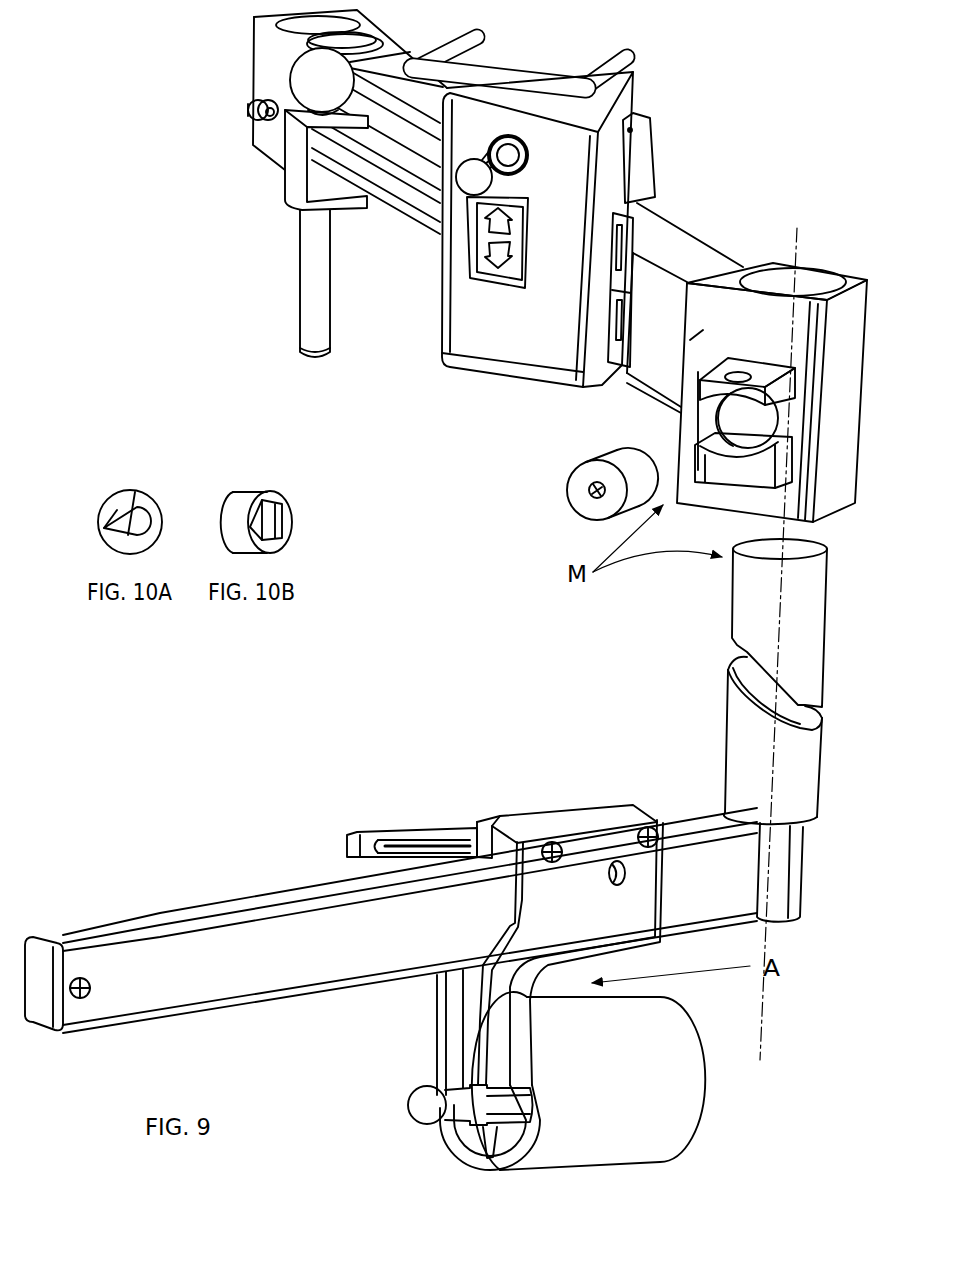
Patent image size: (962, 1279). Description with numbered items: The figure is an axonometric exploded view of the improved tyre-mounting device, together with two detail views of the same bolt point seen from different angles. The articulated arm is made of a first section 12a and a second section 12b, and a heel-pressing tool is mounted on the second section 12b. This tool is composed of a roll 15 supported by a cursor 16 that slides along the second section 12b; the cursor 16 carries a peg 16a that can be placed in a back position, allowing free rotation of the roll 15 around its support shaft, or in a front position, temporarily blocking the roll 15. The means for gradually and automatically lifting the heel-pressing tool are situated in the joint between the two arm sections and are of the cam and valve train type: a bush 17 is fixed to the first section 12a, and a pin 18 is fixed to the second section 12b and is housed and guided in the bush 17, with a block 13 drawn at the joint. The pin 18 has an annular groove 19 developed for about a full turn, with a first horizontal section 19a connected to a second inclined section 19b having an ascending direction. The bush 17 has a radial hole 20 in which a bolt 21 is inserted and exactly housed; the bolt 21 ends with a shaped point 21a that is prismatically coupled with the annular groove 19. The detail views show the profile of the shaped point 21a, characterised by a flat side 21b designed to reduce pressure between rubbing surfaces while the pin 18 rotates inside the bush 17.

In FIG. 9, the first section of the articulated arm 12a is at (660, 237).
In FIG. 9, the second section of the articulated arm 12b is at (170, 928).
In FIG. 9, the connection block 13 is at (793, 257).
In FIG. 9, the roll 15 is at (663, 1110).
In FIG. 9, the cursor 16 is at (587, 848).
In FIG. 9, the peg 16a is at (417, 1098).
In FIG. 9, the bush 17 is at (703, 330).
In FIG. 9, the pin 18 is at (711, 634).
In FIG. 9, the annular groove 19 is at (750, 746).
In FIG. 9, the first horizontal section 19a is at (821, 721).
In FIG. 9, the second inclined section 19b is at (729, 670).
In FIG. 9, the radial hole 20 is at (767, 413).
In FIG. 9, the bolt 21 is at (588, 512).
In FIG. 10A, the bolt 21 is at (130, 522).
In FIG. 10B, the bolt 21 is at (242, 498).
In FIG. 10A, the shaped point 21a is at (138, 512).
In FIG. 10B, the shaped point 21a is at (293, 528).
In FIG. 10A, the flat side 21b is at (110, 534).